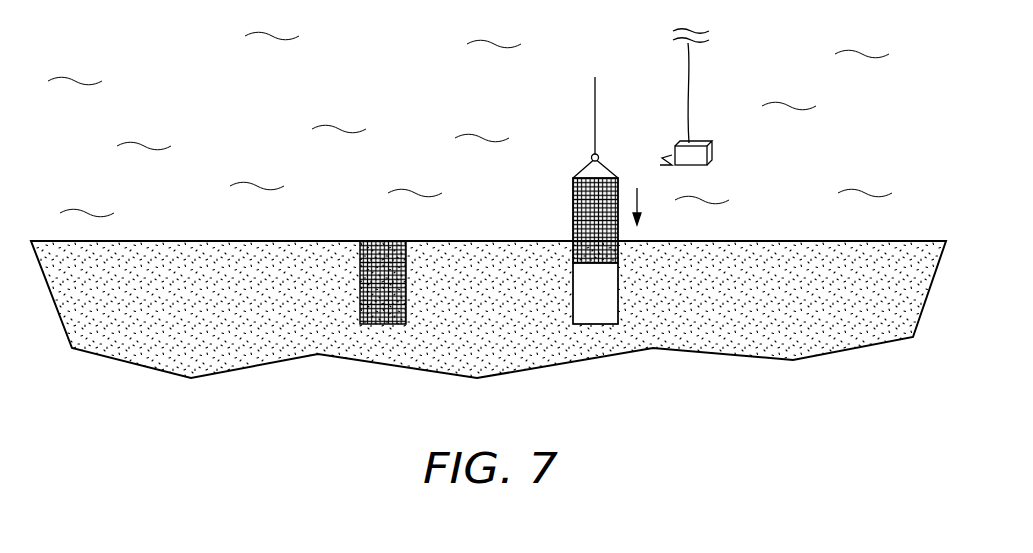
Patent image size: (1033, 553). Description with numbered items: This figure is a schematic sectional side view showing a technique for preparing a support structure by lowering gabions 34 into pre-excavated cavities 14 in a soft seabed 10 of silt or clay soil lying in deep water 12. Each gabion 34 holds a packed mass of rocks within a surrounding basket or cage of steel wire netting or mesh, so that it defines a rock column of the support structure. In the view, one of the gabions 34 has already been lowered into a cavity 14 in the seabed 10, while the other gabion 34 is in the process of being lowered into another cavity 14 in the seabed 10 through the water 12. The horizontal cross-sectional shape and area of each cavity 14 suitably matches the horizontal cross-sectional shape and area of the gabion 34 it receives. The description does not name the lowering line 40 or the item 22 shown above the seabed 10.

The seabed 10 is at (781, 241).
The deep water 12 is at (212, 95).
The cavity 14 is at (594, 310).
The remotely operated vehicle 22 is at (707, 155).
The gabion 34 is at (572, 190).
The lifting line 40 is at (594, 85).